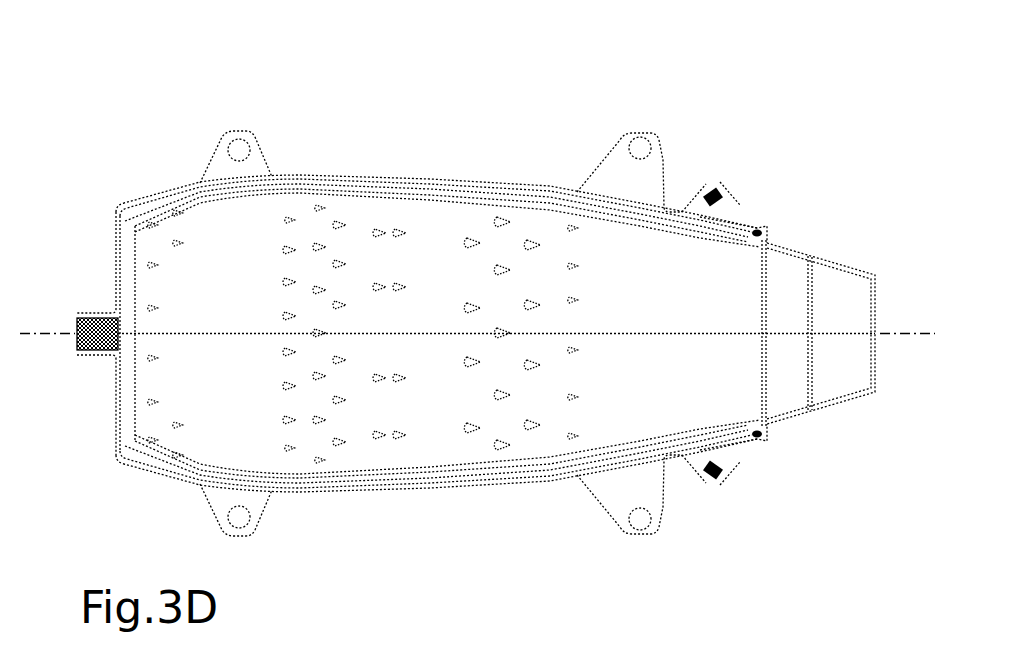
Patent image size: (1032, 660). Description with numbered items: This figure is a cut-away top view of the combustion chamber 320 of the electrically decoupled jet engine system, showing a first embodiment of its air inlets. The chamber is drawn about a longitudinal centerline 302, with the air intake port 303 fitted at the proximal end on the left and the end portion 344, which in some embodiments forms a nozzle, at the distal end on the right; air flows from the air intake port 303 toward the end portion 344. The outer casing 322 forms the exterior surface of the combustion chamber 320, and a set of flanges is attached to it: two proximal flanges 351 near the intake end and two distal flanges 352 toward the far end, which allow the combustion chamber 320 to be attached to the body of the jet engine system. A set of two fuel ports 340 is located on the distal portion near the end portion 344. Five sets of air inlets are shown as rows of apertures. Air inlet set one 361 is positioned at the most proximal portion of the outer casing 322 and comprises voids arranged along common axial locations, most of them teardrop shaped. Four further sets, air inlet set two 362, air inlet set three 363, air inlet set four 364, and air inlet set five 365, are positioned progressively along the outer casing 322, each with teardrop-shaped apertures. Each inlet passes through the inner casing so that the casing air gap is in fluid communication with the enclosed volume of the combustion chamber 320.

The combustion chamber 320 is at (292, 77).
The centerline axis 302 is at (41, 347).
The air intake port 303 is at (80, 308).
The outer casing 322 is at (441, 222).
The fuel ports 340 is at (722, 186).
The end portion 344 is at (826, 252).
The proximal flanges 351 is at (208, 162).
The distal flanges 352 is at (613, 153).
The air inlet set one 361 is at (166, 458).
The air inlet set two 362 is at (306, 470).
The air inlet set three 363 is at (393, 463).
The air inlet set four 364 is at (489, 460).
The air inlet set five 365 is at (576, 470).